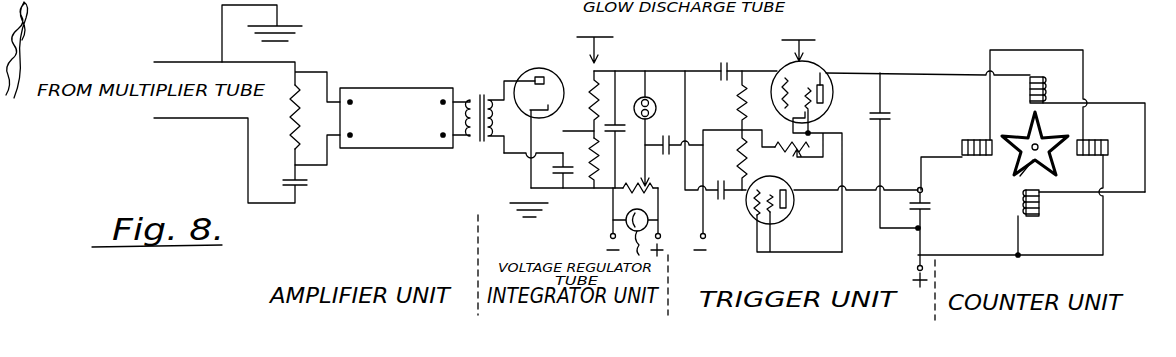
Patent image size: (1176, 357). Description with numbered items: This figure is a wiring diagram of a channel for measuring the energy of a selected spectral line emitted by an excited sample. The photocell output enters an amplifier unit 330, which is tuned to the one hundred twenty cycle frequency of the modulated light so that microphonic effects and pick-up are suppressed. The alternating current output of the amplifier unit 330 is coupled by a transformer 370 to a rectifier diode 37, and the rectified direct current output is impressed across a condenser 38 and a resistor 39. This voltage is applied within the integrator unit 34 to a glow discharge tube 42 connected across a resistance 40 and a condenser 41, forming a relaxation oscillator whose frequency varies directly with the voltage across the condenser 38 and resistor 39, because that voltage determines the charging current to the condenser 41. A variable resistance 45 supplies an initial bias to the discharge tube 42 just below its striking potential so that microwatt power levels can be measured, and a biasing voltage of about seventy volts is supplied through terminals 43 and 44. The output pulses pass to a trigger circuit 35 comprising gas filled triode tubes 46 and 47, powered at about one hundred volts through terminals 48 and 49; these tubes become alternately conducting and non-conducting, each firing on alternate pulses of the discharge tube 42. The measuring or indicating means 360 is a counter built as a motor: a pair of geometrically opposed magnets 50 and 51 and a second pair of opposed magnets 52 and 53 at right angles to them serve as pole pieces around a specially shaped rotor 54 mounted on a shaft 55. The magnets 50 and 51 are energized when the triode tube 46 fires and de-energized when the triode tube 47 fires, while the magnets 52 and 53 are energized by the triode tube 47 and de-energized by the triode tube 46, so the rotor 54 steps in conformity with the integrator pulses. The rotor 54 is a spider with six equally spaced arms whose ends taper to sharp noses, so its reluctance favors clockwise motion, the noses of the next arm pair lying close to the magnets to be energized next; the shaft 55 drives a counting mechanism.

The amplifier unit 330 is at (399, 87).
The transformer 370 is at (483, 97).
The rectifier diode 37 is at (540, 68).
The condenser 38 is at (562, 191).
The resistor 39 is at (594, 194).
The resistance 40 is at (592, 80).
The integrator unit 34 is at (595, 42).
The condenser 41 is at (623, 129).
The glow discharge tube 42 is at (680, 14).
The terminal 43 is at (610, 236).
The terminal 44 is at (660, 236).
The variable resistance 45 is at (650, 184).
The trigger circuit 35 is at (798, 42).
The gas filled triode tube 46 is at (825, 70).
The gas filled triode tube 47 is at (795, 202).
The terminal 48 is at (706, 236).
The terminal 49 is at (917, 268).
The measuring or indicating means 360 is at (1041, 43).
The magnet 50 is at (1048, 91).
The magnet 51 is at (1044, 207).
The magnet 52 is at (1105, 145).
The magnet 53 is at (966, 140).
The rotor 54 is at (1008, 162).
The shaft 55 is at (1020, 176).